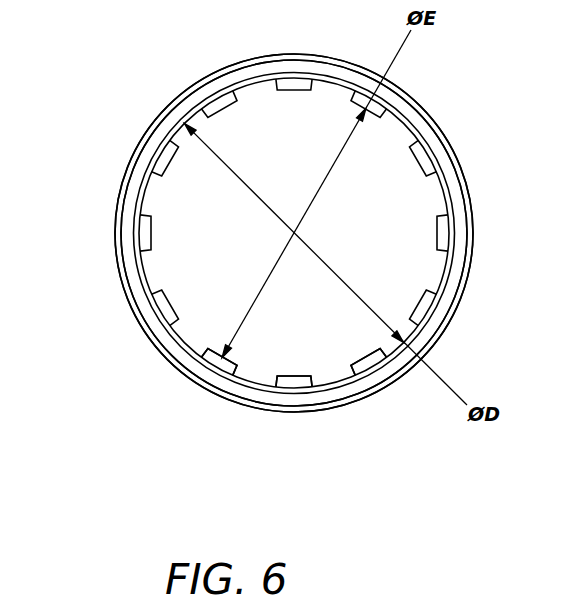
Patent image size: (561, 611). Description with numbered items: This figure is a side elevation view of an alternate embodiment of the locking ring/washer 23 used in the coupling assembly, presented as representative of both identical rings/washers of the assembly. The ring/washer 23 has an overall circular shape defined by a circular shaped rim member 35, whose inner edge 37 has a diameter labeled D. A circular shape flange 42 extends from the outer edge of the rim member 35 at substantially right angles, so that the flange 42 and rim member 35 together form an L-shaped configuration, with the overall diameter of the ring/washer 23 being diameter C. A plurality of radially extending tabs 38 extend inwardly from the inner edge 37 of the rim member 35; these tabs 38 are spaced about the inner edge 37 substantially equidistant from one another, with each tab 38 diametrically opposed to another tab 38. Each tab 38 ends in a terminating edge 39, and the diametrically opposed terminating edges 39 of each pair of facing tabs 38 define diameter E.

The flange 42 is at (253, 55).
The rim member 35 is at (439, 127).
The locking ring/washer 23 is at (250, 405).
The inner edge 37 is at (252, 83).
The radially extending tabs 38 is at (140, 232).
The terminating edge 39 is at (370, 352).